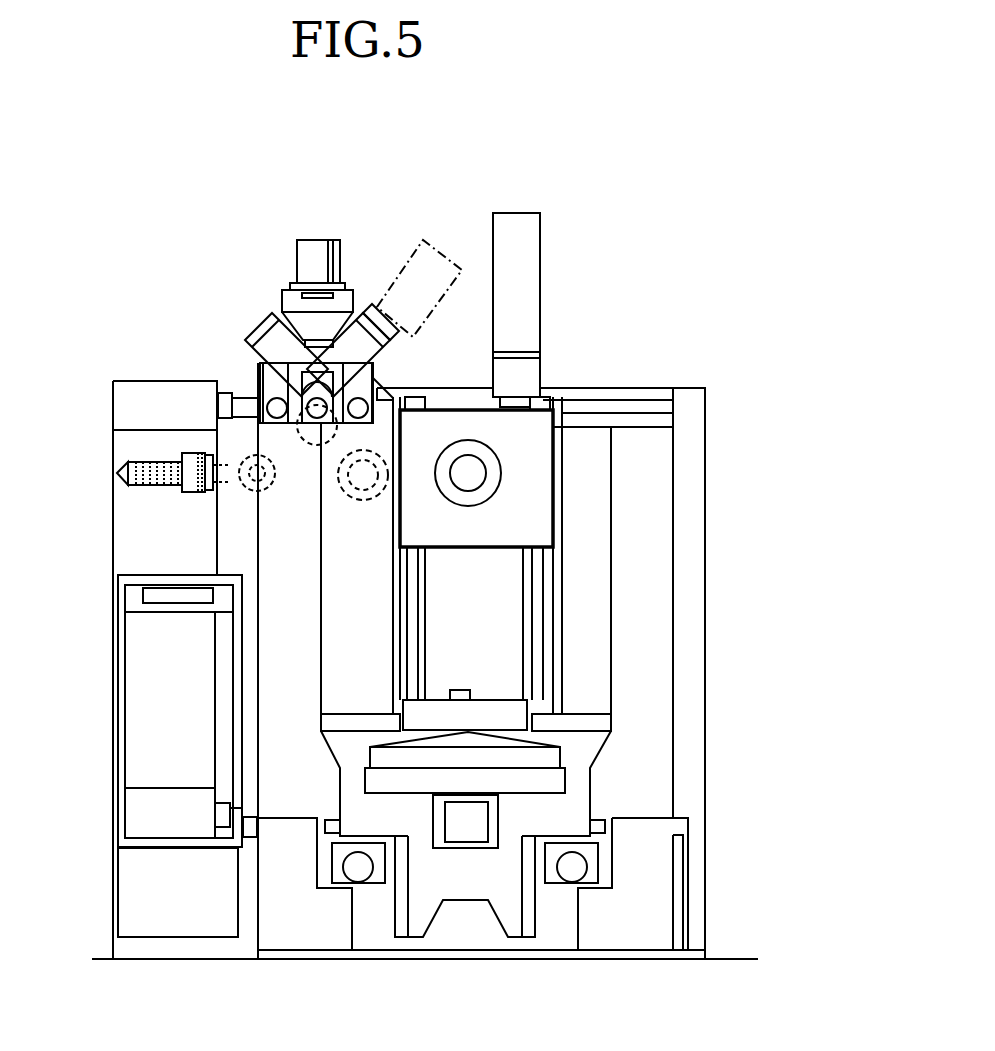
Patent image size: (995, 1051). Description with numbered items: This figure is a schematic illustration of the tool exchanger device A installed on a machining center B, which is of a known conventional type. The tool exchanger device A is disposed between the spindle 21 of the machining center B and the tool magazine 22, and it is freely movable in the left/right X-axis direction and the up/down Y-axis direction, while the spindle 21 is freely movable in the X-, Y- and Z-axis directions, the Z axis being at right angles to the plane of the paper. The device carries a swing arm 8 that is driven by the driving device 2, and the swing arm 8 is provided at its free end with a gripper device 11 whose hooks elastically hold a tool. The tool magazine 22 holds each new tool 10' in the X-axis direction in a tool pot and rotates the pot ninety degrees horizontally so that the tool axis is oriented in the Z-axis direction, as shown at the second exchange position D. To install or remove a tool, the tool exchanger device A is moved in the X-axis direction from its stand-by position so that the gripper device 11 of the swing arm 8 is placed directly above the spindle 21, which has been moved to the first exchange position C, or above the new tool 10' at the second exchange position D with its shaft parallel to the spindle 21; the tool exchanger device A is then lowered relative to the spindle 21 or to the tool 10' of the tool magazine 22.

The driving device 2 is at (340, 258).
The swing arm 8 is at (262, 368).
The new tool 10' is at (306, 362).
The gripper device 11 is at (288, 425).
The spindle 21 is at (479, 481).
The tool magazine 22 is at (108, 494).
The tool exchanger device A is at (328, 214).
The machining center B is at (589, 370).
The first exchange position C is at (363, 494).
The second exchange position D is at (260, 494).